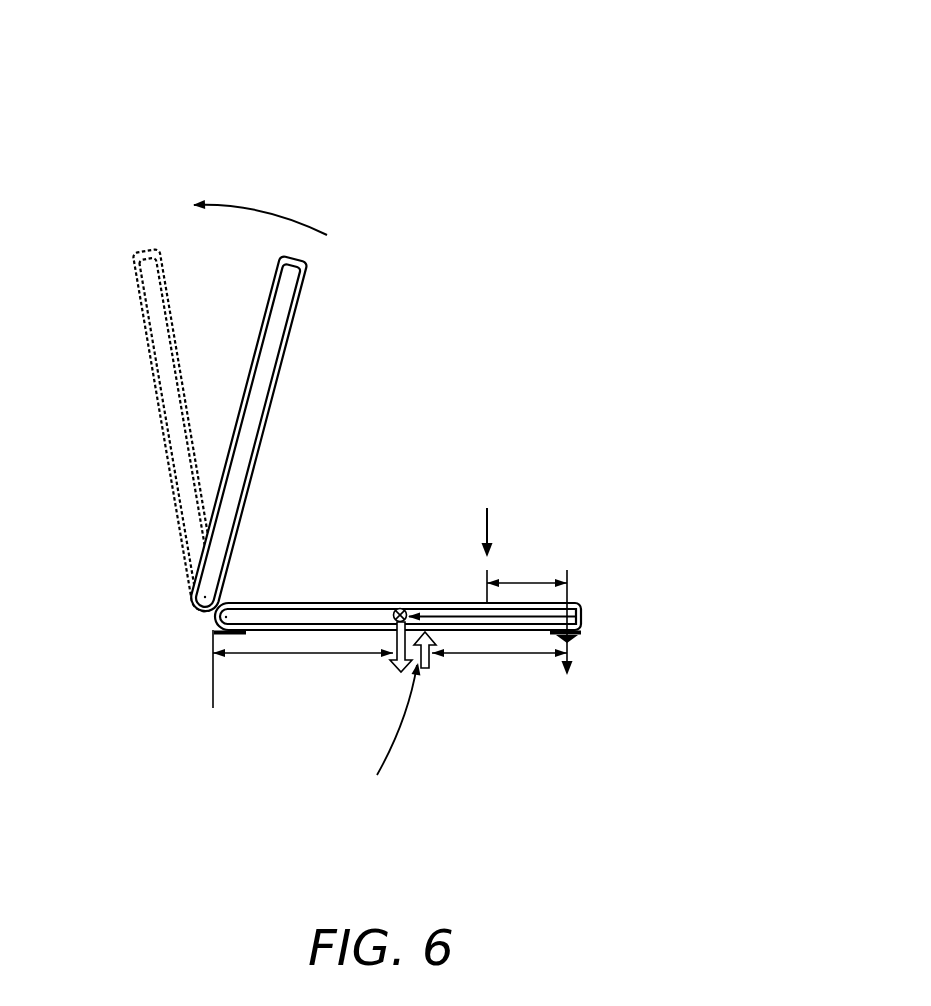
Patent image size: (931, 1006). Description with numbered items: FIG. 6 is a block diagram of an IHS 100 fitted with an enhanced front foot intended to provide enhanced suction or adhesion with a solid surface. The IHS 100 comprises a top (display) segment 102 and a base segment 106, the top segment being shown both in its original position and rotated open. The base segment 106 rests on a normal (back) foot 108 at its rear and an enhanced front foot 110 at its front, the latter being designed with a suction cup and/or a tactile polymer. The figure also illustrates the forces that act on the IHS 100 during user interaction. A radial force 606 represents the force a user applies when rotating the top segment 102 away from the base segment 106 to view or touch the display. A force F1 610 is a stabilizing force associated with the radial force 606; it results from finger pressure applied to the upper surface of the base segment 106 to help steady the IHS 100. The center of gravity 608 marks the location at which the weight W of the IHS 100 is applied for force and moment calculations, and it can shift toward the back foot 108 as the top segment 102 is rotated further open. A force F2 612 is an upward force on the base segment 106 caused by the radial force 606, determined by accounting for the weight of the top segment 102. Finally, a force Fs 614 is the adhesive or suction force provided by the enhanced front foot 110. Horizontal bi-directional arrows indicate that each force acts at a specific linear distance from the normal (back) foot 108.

The IHS 100 is at (102, 56).
The top (display) segment 102 is at (142, 226).
The base segment 106 is at (583, 612).
The normal (back) foot 108 is at (216, 637).
The enhanced front foot 110 is at (583, 640).
The radial force 606 is at (322, 238).
The center of gravity 608 is at (396, 604).
The force F1 610 is at (497, 498).
The force F2 612 is at (430, 678).
The force Fs 614 is at (581, 696).